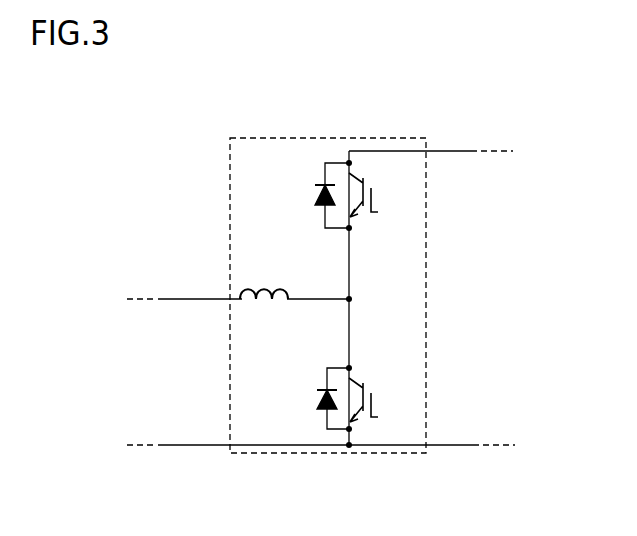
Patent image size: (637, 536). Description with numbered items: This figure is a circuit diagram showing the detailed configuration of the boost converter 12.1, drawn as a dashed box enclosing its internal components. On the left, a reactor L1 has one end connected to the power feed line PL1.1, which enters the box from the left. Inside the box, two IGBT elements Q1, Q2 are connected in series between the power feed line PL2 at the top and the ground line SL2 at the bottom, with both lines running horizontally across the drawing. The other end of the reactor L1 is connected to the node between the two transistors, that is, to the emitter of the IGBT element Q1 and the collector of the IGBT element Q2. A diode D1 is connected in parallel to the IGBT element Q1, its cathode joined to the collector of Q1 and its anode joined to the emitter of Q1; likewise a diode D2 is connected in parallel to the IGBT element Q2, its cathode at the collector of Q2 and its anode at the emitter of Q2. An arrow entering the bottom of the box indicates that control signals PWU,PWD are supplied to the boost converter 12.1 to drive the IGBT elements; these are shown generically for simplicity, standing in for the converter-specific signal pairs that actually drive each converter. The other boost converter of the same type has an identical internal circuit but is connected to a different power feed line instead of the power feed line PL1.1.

The boost converter 12.1 is at (231, 122).
The power feed line PL2 is at (458, 149).
The power feed line PL1.1 is at (186, 297).
The reactor L1 is at (264, 282).
The IGBT element Q1 is at (379, 194).
The diode D1 is at (318, 195).
The IGBT element Q2 is at (379, 398).
The diode D2 is at (315, 398).
The ground line SL2 is at (186, 443).
The control signals PWU,PWD is at (366, 454).